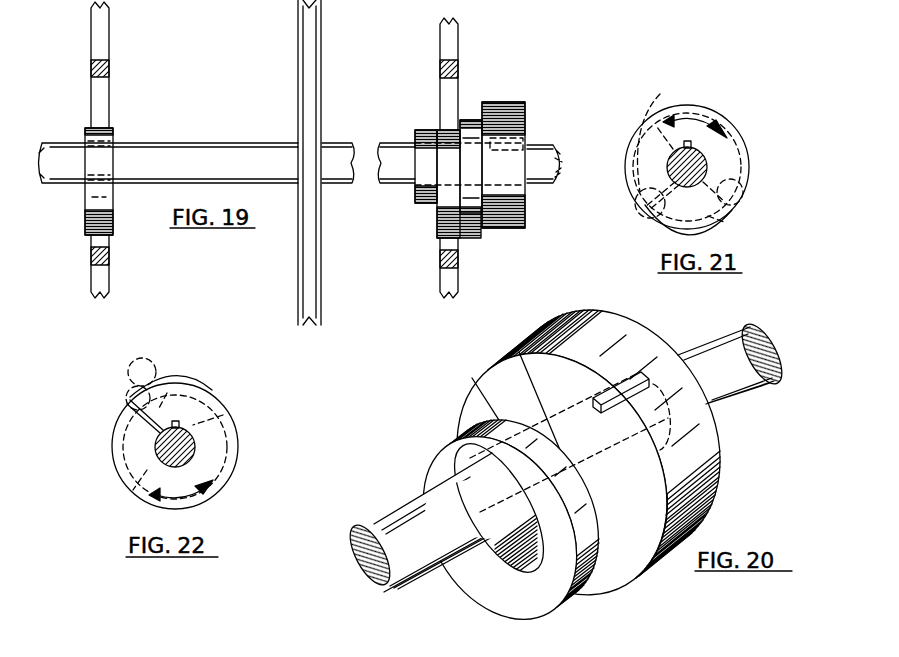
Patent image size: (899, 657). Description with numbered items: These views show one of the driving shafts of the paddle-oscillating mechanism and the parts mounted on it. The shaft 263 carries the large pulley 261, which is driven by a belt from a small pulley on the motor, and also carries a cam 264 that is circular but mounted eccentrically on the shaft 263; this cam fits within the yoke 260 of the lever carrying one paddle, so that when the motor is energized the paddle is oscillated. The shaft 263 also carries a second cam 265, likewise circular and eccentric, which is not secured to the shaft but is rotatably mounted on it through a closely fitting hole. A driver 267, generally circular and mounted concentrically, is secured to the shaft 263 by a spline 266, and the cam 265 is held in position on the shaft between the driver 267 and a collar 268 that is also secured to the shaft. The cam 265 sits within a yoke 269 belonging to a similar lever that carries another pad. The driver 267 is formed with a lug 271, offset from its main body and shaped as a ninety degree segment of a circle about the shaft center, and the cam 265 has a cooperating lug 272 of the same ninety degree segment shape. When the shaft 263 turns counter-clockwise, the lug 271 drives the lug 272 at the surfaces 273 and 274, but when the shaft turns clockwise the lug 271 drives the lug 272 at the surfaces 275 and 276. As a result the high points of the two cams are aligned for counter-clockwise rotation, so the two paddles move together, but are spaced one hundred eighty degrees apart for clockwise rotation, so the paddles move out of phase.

In FIG. 19, the yoke 260 is at (103, 45).
In FIG. 19, the pulley 261 is at (310, 268).
In FIG. 19, the shaft 263 is at (112, 236).
In FIG. 21, the shaft 263 is at (700, 160).
In FIG. 22, the shaft 263 is at (193, 433).
In FIG. 20, the shaft 263 is at (727, 342).
In FIG. 19, the cam 264 is at (88, 238).
In FIG. 19, the second cam 265 is at (437, 228).
In FIG. 21, the second cam 265 is at (660, 234).
In FIG. 22, the second cam 265 is at (183, 426).
In FIG. 20, the second cam 265 is at (507, 590).
In FIG. 19, the spline 266 is at (528, 137).
In FIG. 21, the spline 266 is at (692, 141).
In FIG. 22, the spline 266 is at (178, 421).
In FIG. 19, the driver 267 is at (498, 226).
In FIG. 21, the driver 267 is at (737, 157).
In FIG. 22, the driver 267 is at (225, 455).
In FIG. 20, the driver 267 is at (625, 335).
In FIG. 19, the collar 268 is at (425, 130).
In FIG. 19, the yoke 269 is at (447, 50).
In FIG. 21, the lug 271 is at (634, 150).
In FIG. 22, the lug 271 is at (113, 448).
In FIG. 20, the lug 271 is at (467, 401).
In FIG. 21, the lug 272 is at (727, 226).
In FIG. 22, the lug 272 is at (175, 368).
In FIG. 20, the lug 272 is at (613, 578).
In FIG. 21, the surface 273 is at (634, 193).
In FIG. 22, the surface 273 is at (127, 478).
In FIG. 20, the surface 273 is at (615, 548).
In FIG. 21, the surface 274 is at (650, 225).
In FIG. 22, the surface 274 is at (225, 415).
In FIG. 20, the surface 274 is at (487, 383).
In FIG. 21, the surface 275 is at (653, 120).
In FIG. 22, the surface 275 is at (127, 415).
In FIG. 21, the surface 276 is at (742, 190).
In FIG. 22, the surface 276 is at (131, 365).